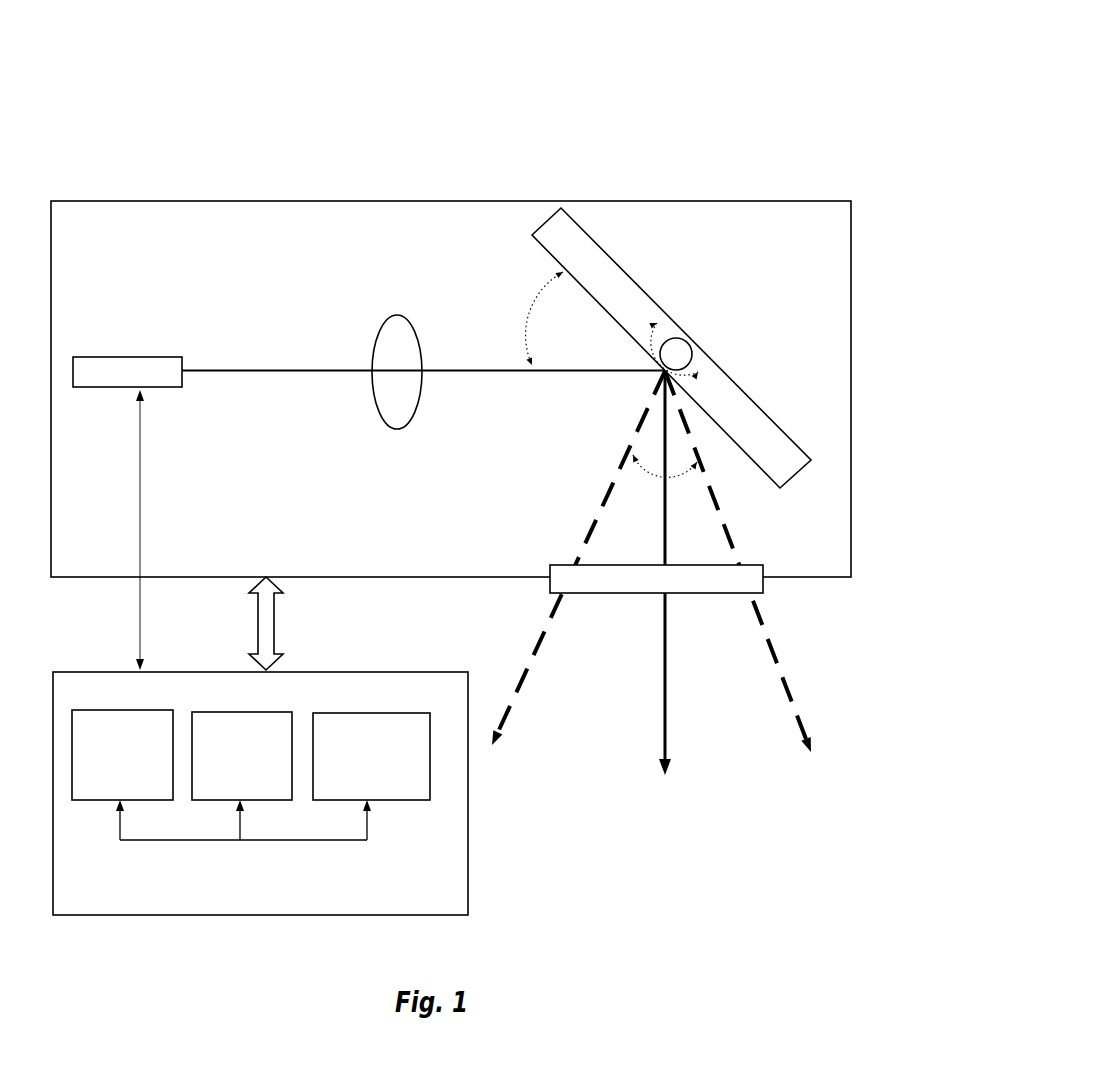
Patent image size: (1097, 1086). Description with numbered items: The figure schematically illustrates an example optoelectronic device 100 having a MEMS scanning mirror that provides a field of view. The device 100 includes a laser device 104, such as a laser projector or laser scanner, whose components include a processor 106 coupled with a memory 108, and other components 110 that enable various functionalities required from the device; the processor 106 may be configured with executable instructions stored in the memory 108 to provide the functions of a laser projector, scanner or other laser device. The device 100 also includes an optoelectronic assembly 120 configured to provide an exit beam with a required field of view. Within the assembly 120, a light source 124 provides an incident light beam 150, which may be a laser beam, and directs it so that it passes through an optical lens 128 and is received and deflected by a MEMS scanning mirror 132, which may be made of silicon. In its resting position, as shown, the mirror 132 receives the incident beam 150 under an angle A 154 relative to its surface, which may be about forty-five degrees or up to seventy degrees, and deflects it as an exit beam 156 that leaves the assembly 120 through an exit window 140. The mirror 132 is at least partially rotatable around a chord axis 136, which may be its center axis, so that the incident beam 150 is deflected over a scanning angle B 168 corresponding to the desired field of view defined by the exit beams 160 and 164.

The optoelectronic device 100 is at (650, 40).
The laser device 104 is at (469, 891).
The processor 106 is at (103, 803).
The memory 108 is at (272, 803).
The other components 110 is at (407, 795).
The optoelectronic assembly 120 is at (333, 201).
The light source 124 is at (184, 360).
The optical lens 128 is at (410, 428).
The MEMS scanning mirror 132 is at (632, 282).
The chord axis 136 is at (692, 343).
The exit window 140 is at (765, 588).
The incident light beam 150 is at (223, 371).
The angle A 154 is at (535, 295).
The exit beam 156 is at (670, 748).
The exit beam 160 is at (518, 688).
The exit beam 164 is at (778, 667).
The scanning angle B 168 is at (678, 470).